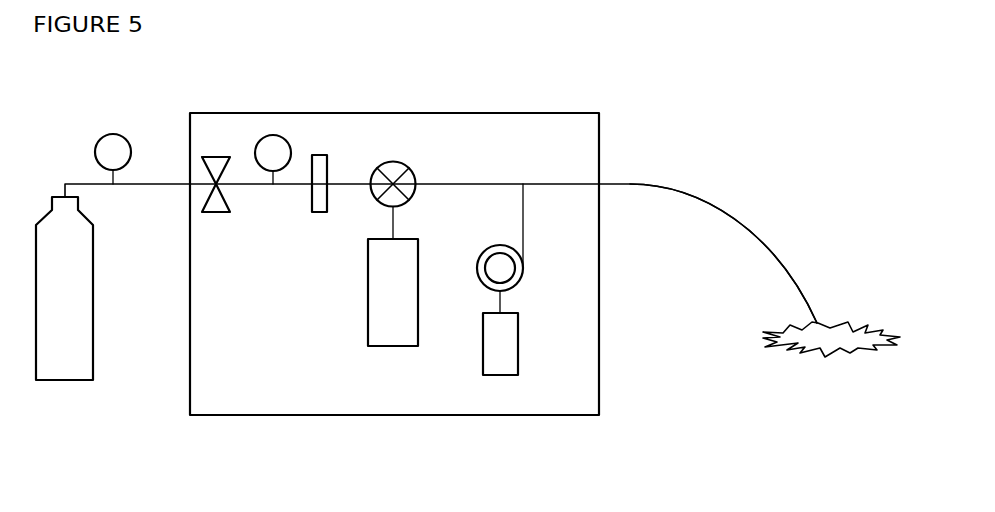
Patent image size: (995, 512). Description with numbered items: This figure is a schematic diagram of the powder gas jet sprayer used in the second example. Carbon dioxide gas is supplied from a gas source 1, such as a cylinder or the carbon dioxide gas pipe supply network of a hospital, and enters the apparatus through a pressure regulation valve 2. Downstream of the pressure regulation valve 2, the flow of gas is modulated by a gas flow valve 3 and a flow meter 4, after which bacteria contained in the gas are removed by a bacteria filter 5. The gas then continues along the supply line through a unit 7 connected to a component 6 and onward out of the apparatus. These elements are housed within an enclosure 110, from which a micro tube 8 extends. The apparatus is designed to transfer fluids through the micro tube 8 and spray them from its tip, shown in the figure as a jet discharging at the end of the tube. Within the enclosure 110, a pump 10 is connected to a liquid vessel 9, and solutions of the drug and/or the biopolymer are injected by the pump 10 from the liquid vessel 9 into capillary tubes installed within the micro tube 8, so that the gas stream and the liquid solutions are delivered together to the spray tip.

The gas cylinder 1 is at (70, 367).
The pressure regulation valve 2 is at (113, 150).
The gas flow valve 3 is at (216, 156).
The flow meter 4 is at (275, 148).
The bacteria filter 5 is at (320, 155).
The control unit 6 is at (391, 332).
The pump 7 is at (393, 168).
The micro tube 8 is at (710, 200).
The liquid vessel 9 is at (506, 360).
The pump 10 is at (503, 272).
The enclosure 110 is at (577, 132).